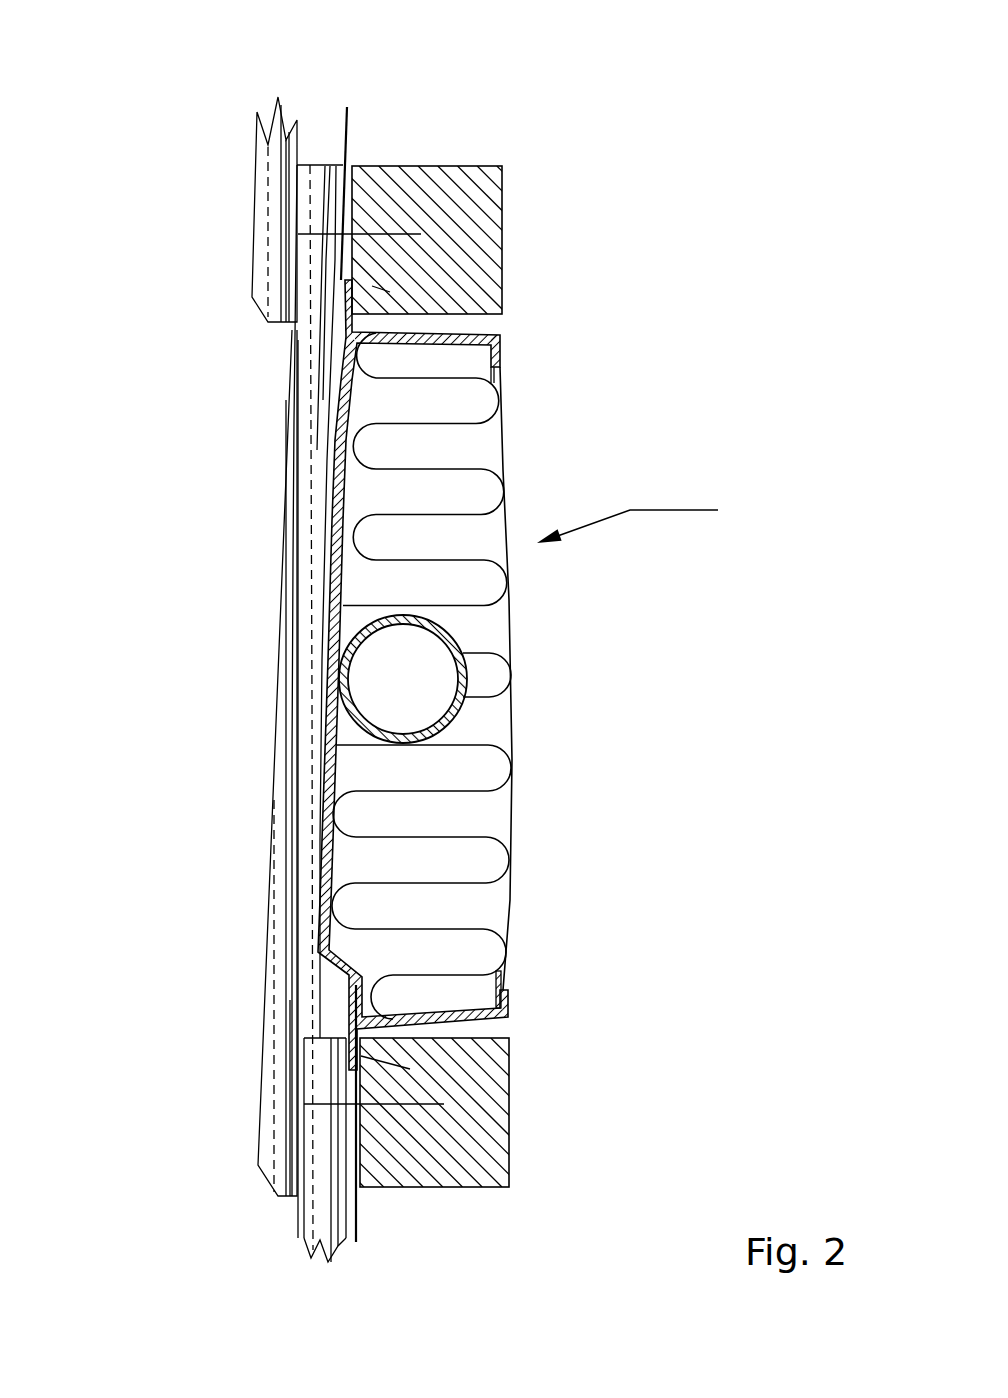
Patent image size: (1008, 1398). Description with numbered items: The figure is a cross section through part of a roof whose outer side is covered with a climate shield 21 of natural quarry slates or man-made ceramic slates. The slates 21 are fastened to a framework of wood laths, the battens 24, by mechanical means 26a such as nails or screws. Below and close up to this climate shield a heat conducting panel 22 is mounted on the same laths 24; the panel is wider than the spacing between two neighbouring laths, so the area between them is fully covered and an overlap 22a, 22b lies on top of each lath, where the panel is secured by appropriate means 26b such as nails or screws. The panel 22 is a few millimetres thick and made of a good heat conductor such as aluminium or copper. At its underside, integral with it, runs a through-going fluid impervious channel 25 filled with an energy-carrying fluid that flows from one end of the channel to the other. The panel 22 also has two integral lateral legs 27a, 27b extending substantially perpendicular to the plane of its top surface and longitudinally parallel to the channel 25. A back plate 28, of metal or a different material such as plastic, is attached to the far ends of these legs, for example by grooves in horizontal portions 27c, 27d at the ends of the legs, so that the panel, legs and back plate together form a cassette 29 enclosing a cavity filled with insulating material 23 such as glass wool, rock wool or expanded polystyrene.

The climate shield 21 is at (257, 202).
The heat conducting panel 22 is at (345, 545).
The overlap 22a is at (347, 313).
The overlap 22b is at (340, 103).
The insulating material 23 is at (477, 872).
The battens 24 is at (493, 205).
The fluid impervious channel 25 is at (465, 653).
The mechanical means 26a is at (370, 233).
The appropriate means 26b is at (377, 288).
The lateral leg 27a is at (458, 1019).
The lateral leg 27b is at (420, 343).
The horizontal portion 27c is at (504, 992).
The horizontal portion 27d is at (502, 362).
The back plate 28 is at (510, 798).
The cassette 29 is at (656, 517).